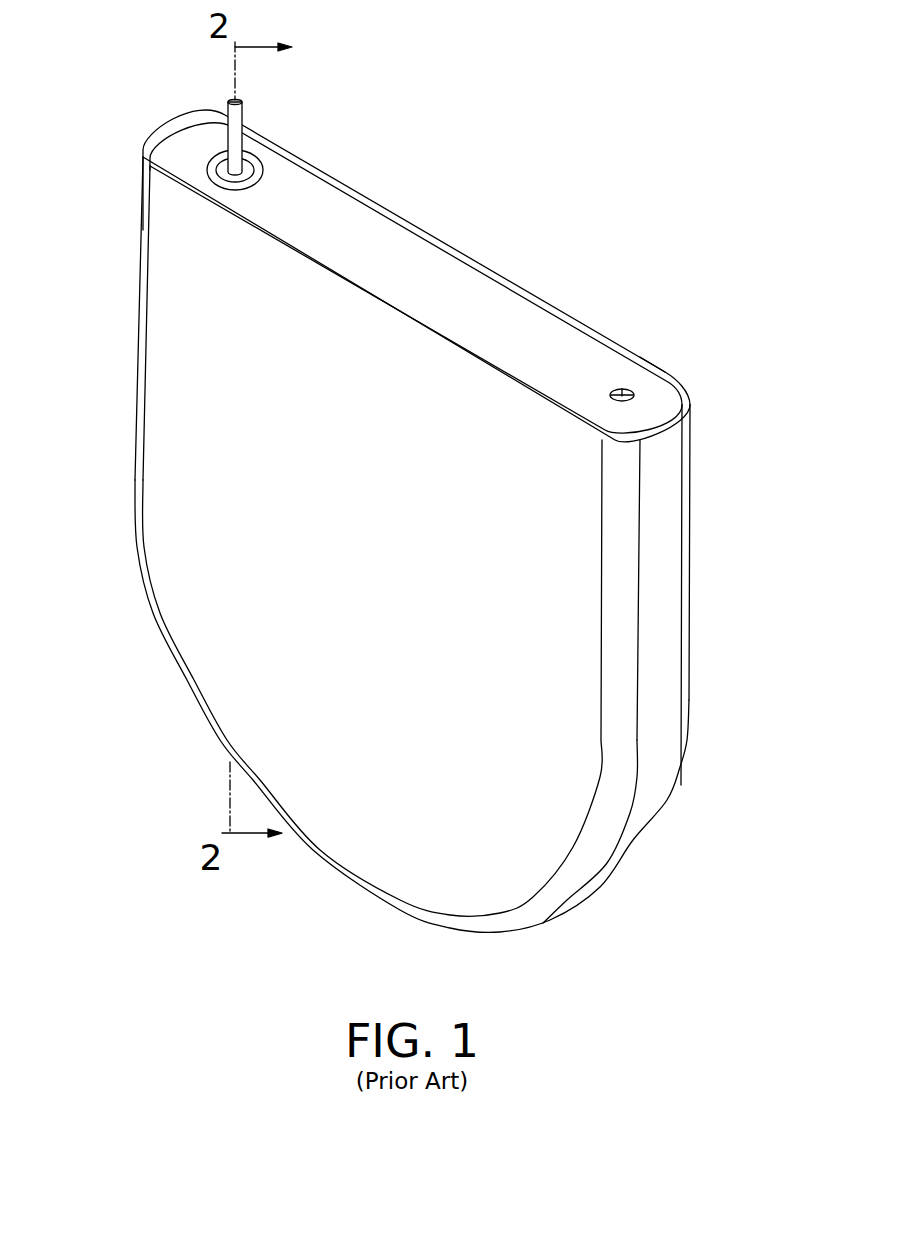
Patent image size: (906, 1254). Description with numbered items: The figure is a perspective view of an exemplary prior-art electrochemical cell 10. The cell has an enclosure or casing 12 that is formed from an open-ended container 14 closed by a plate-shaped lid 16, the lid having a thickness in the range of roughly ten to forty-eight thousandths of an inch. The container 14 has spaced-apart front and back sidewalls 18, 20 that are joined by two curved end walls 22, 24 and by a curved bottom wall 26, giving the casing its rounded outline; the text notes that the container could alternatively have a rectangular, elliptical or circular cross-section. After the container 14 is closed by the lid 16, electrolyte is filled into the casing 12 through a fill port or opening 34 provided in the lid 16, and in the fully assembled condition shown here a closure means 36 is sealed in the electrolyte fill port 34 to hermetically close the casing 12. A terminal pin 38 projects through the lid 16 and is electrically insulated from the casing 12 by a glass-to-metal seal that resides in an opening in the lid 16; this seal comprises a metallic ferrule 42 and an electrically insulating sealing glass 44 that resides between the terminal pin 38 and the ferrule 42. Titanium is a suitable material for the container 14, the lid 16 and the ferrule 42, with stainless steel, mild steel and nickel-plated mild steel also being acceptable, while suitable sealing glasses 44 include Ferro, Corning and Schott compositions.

The electrochemical cell 10 is at (632, 62).
The casing 12 is at (533, 225).
The open-ended container 14 is at (712, 428).
The lid 16 is at (396, 253).
The front sidewall 18 is at (573, 772).
The back sidewall 20 is at (686, 476).
The curved end wall 22 is at (673, 627).
The curved end wall 24 is at (140, 248).
The curved bottom wall 26 is at (315, 853).
The electrolyte fill port 34 is at (667, 372).
The closure means 36 is at (622, 389).
The terminal pin 38 is at (243, 110).
The ferrule 42 is at (263, 165).
The sealing glass 44 is at (220, 152).